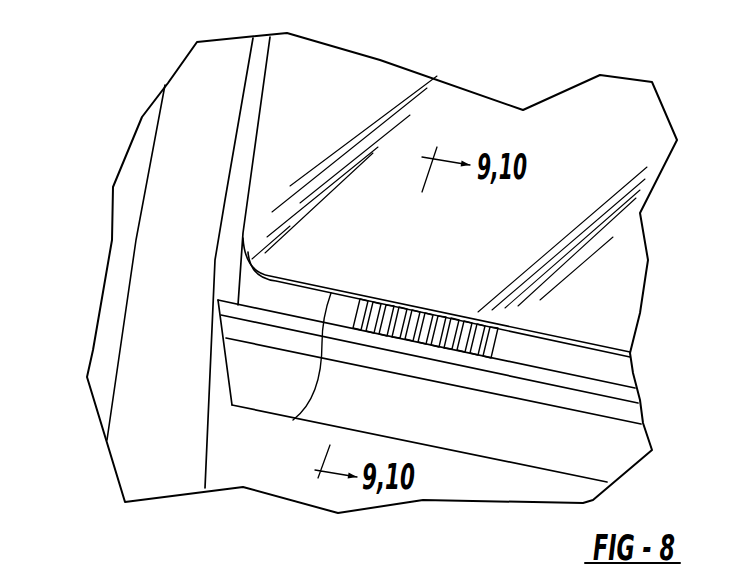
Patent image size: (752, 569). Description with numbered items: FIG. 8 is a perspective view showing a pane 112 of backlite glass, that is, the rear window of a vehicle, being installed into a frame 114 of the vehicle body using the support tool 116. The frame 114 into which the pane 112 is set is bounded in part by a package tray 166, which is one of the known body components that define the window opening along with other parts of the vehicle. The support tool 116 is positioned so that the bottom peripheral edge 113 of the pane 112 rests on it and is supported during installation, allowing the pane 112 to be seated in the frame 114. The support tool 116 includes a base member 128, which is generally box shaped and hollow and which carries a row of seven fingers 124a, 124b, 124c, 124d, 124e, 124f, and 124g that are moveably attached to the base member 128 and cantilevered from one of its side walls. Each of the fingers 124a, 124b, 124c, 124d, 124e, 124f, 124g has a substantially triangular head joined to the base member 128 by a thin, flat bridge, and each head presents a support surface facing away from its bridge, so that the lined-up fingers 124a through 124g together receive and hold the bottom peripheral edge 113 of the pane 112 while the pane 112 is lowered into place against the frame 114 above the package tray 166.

The pane 112 is at (482, 137).
The bottom peripheral edge 113 is at (293, 420).
The frame 114 is at (300, 303).
The support tool 116 is at (523, 357).
The finger 124a is at (377, 302).
The finger 124b is at (403, 309).
The finger 124c is at (418, 312).
The finger 124d is at (441, 316).
The finger 124e is at (430, 342).
The finger 124f is at (457, 348).
The finger 124g is at (483, 326).
The base member 128 is at (498, 338).
The package tray 166 is at (270, 288).